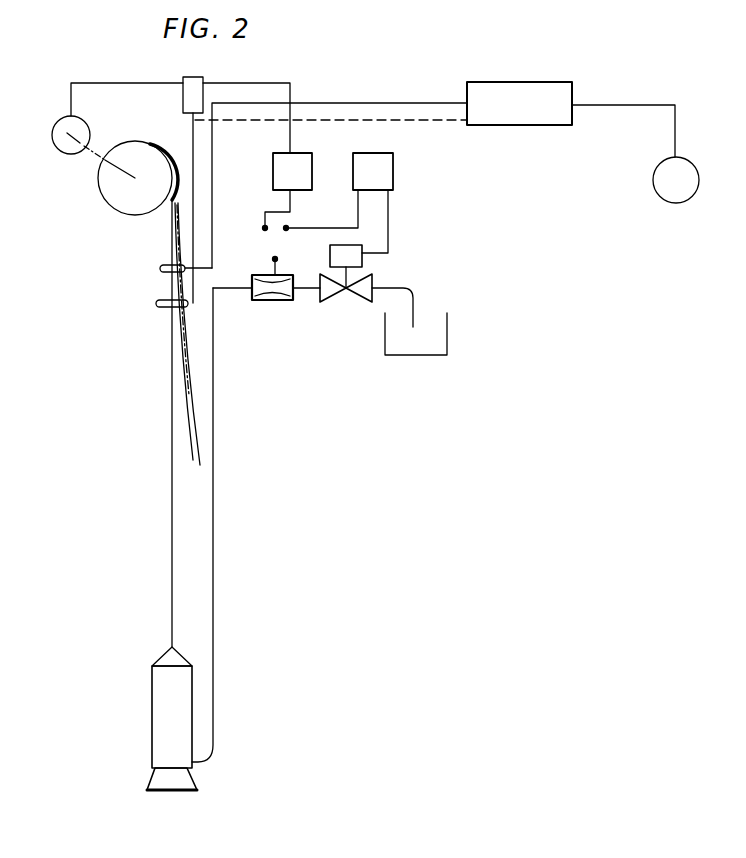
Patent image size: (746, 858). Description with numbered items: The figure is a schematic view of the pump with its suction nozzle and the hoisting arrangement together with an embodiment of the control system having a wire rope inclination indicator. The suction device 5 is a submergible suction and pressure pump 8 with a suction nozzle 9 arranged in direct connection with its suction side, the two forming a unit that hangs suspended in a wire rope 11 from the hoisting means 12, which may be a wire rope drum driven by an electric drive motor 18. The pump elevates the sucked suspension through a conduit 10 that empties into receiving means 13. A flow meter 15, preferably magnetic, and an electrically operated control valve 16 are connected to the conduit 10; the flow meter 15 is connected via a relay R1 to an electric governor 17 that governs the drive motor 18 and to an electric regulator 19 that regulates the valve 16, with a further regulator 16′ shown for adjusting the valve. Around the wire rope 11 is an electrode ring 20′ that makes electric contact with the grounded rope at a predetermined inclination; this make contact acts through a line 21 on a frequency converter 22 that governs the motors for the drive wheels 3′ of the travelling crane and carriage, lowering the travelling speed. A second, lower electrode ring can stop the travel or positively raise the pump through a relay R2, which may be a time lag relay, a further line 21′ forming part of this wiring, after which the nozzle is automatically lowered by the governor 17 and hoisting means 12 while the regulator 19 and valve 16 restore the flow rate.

The electric drive motor 18 is at (63, 151).
The hoisting means 12 is at (113, 189).
The relay R2 is at (183, 100).
The line 21′ is at (197, 177).
The line 21 is at (388, 103).
The frequency converter 22 is at (517, 125).
The drive wheels 3′ is at (664, 188).
The electric governor 17 is at (288, 192).
The electric regulator 19 is at (339, 203).
The relay R1 is at (273, 254).
The flow meter 15 is at (265, 300).
The control valve 16 is at (356, 290).
The regulator 16′ is at (364, 262).
The receiving means 13 is at (385, 342).
The conduit 10 is at (214, 497).
The wire rope 11 is at (172, 485).
The electrode ring 20′ is at (160, 267).
The suction device 5 is at (150, 686).
The pump 8 is at (170, 708).
The suction nozzle 9 is at (156, 772).